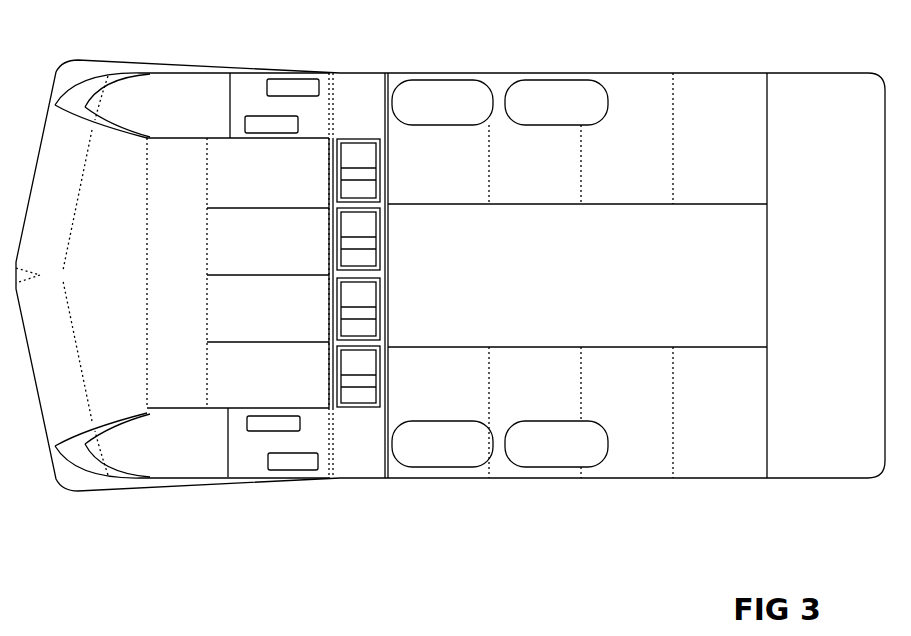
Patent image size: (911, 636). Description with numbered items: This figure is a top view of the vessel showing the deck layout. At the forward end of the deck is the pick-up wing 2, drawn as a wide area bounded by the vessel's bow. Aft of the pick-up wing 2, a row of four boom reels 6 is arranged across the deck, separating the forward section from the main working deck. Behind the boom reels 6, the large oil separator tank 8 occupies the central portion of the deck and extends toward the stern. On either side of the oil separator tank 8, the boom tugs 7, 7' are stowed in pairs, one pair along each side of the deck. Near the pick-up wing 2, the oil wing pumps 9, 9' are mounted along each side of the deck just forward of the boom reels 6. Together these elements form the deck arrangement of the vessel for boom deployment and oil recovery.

The pick-up wing 2 is at (177, 295).
The boom reels 6 is at (366, 138).
The boom tugs 7 is at (442, 308).
The boom tugs 7' is at (556, 310).
The oil separator tank 8 is at (544, 297).
The oil wing pumps 9 is at (270, 334).
The oil wing pumps 9' is at (293, 316).